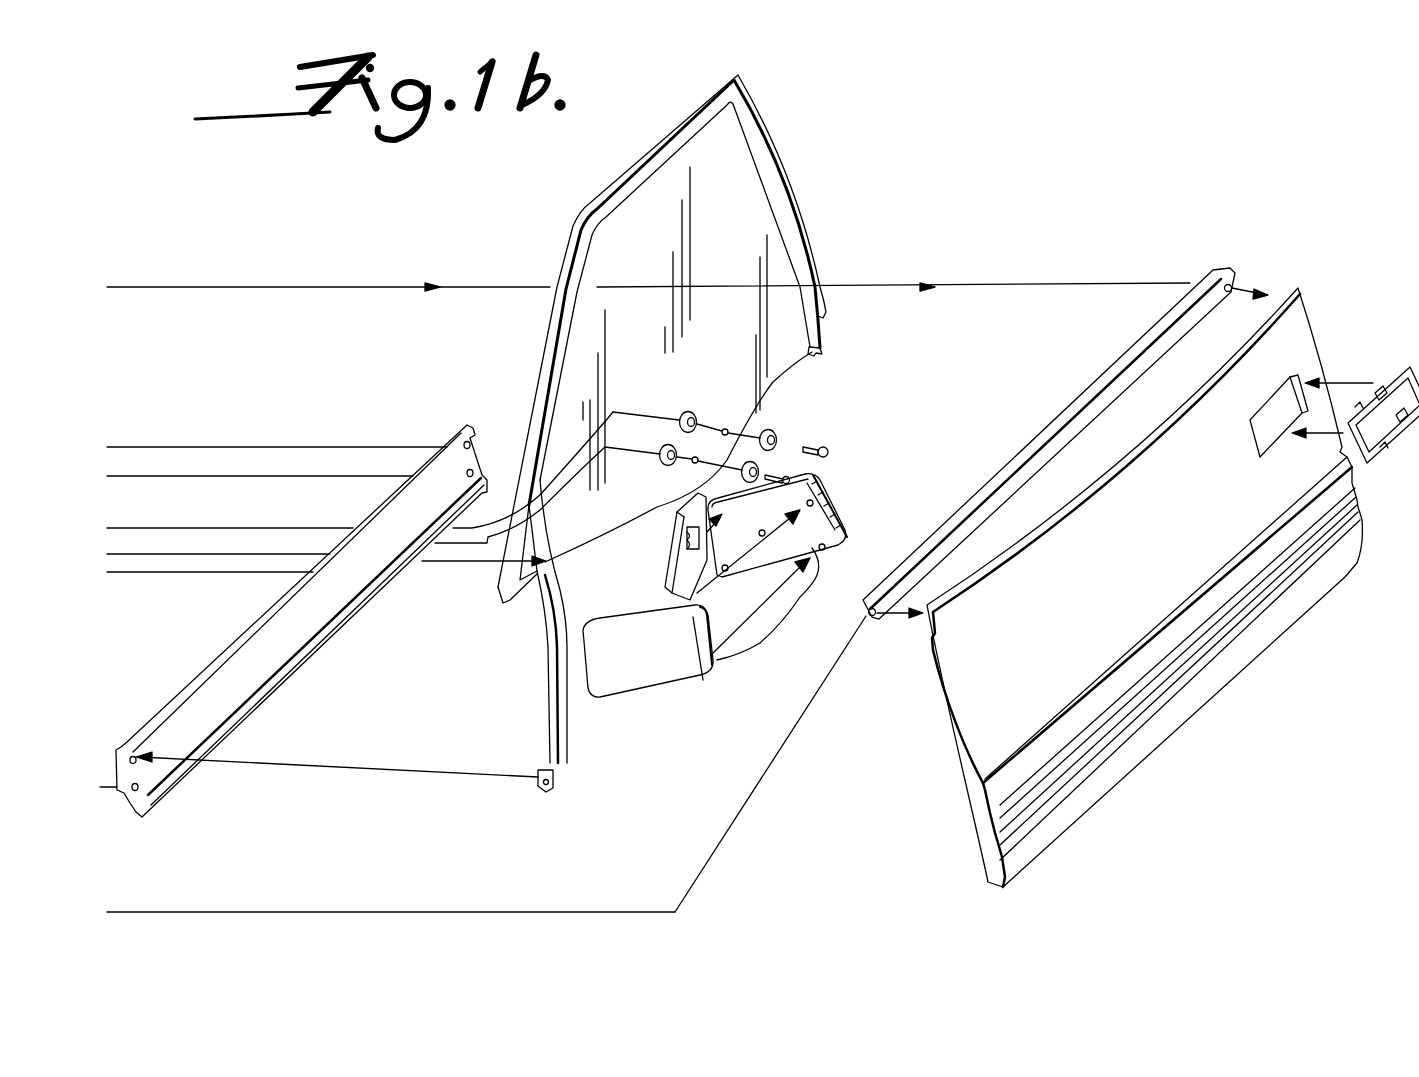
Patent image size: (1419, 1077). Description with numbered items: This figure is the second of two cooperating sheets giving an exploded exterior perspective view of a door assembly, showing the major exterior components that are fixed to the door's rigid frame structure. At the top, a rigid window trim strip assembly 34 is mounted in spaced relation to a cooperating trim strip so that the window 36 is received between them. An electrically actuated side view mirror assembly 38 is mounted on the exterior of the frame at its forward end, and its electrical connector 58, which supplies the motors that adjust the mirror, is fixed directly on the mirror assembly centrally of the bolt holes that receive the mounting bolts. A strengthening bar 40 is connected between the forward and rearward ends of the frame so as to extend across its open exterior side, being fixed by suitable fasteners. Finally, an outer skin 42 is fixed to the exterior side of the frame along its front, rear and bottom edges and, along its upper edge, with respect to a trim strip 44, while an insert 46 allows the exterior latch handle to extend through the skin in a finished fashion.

The rigid window trim strip assembly 34 is at (787, 192).
The window 36 is at (775, 375).
The side view mirror assembly 38 is at (715, 555).
The strengthening bar 40 is at (253, 675).
The outer skin 42 is at (1113, 772).
The trim strip 44 is at (1053, 423).
The insert 46 is at (1400, 433).
The electrical connector 58 is at (677, 533).